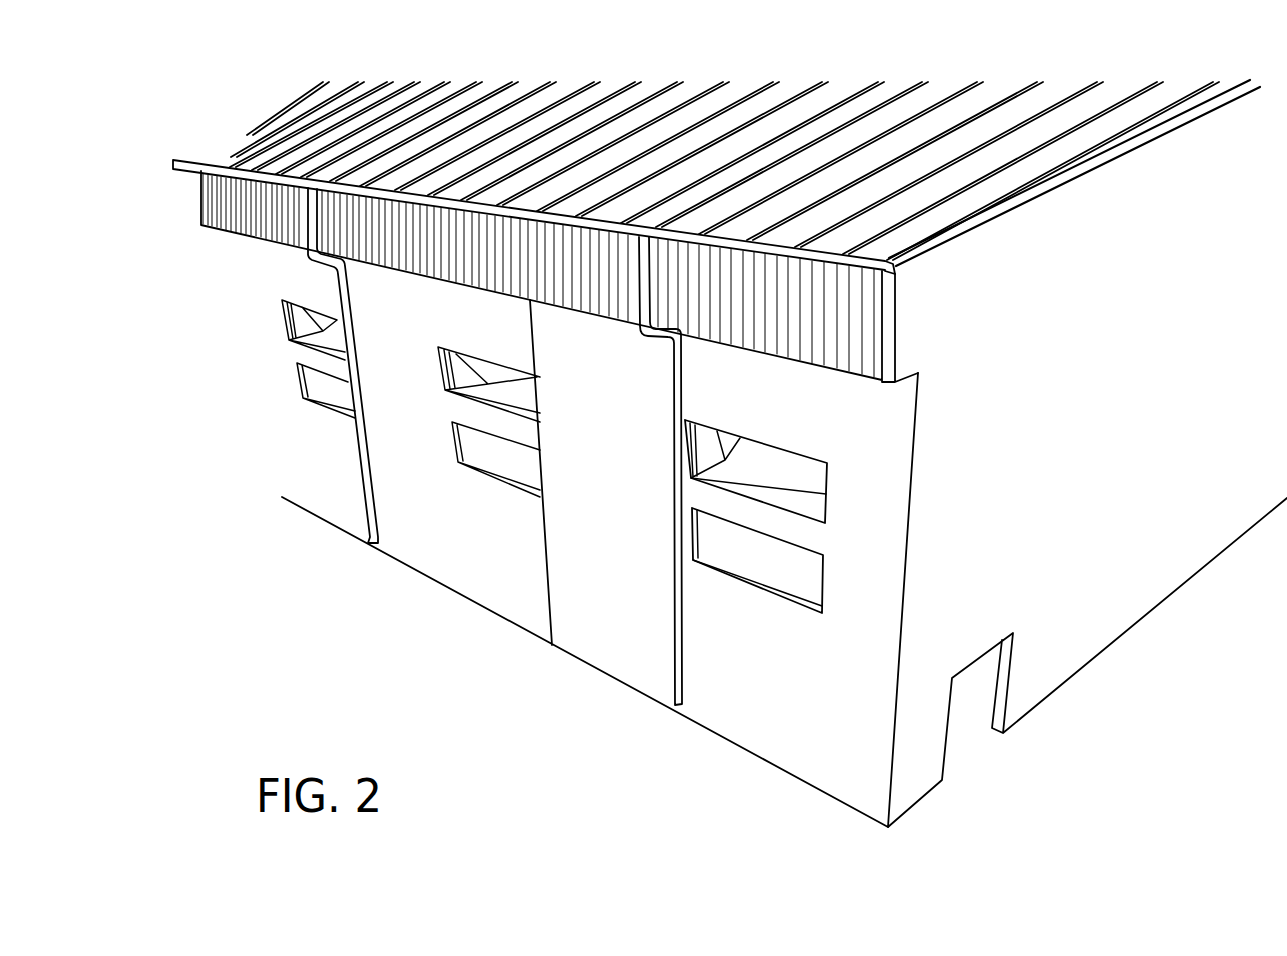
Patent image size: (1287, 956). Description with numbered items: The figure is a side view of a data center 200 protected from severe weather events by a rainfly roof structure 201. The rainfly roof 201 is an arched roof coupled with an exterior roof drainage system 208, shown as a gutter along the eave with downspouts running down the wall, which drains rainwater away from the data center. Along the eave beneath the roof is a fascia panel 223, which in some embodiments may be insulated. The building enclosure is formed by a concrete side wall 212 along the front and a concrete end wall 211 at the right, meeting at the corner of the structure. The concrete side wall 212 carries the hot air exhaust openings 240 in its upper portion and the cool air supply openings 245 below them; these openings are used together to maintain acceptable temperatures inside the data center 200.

The data center 200 is at (296, 612).
The rainfly roof structure 201 is at (337, 133).
The fascia panel 223 is at (258, 212).
The exterior roof drainage system 208 is at (640, 287).
The concrete side wall 212 is at (493, 592).
The hot air exhaust openings 240 is at (800, 468).
The cool air supply openings 245 is at (793, 575).
The concrete end wall 211 is at (1132, 588).